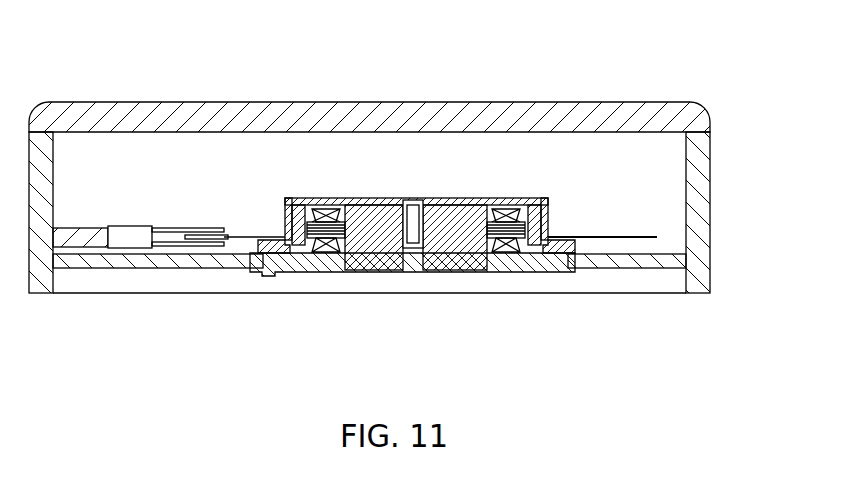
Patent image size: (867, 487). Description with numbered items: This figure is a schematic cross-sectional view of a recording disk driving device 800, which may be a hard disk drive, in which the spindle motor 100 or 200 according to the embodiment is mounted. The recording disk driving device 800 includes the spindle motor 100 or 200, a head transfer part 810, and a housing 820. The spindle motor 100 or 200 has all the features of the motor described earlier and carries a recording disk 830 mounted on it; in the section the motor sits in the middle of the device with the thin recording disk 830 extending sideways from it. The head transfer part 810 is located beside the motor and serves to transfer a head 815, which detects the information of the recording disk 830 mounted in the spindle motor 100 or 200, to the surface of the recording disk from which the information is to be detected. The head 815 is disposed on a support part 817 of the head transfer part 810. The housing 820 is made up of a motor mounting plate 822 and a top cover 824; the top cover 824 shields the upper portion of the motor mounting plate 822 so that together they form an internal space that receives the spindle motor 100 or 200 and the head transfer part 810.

The recording disk driving device 800 is at (384, 25).
The spindle motor 100 is at (452, 186).
The spindle motor 200 is at (412, 237).
The housing 820 is at (760, 112).
The top cover 824 is at (697, 120).
The motor mounting plate 822 is at (697, 265).
The head transfer part 810 is at (136, 249).
The head 815 is at (228, 244).
The support part 817 is at (195, 246).
The recording disk 830 is at (603, 236).